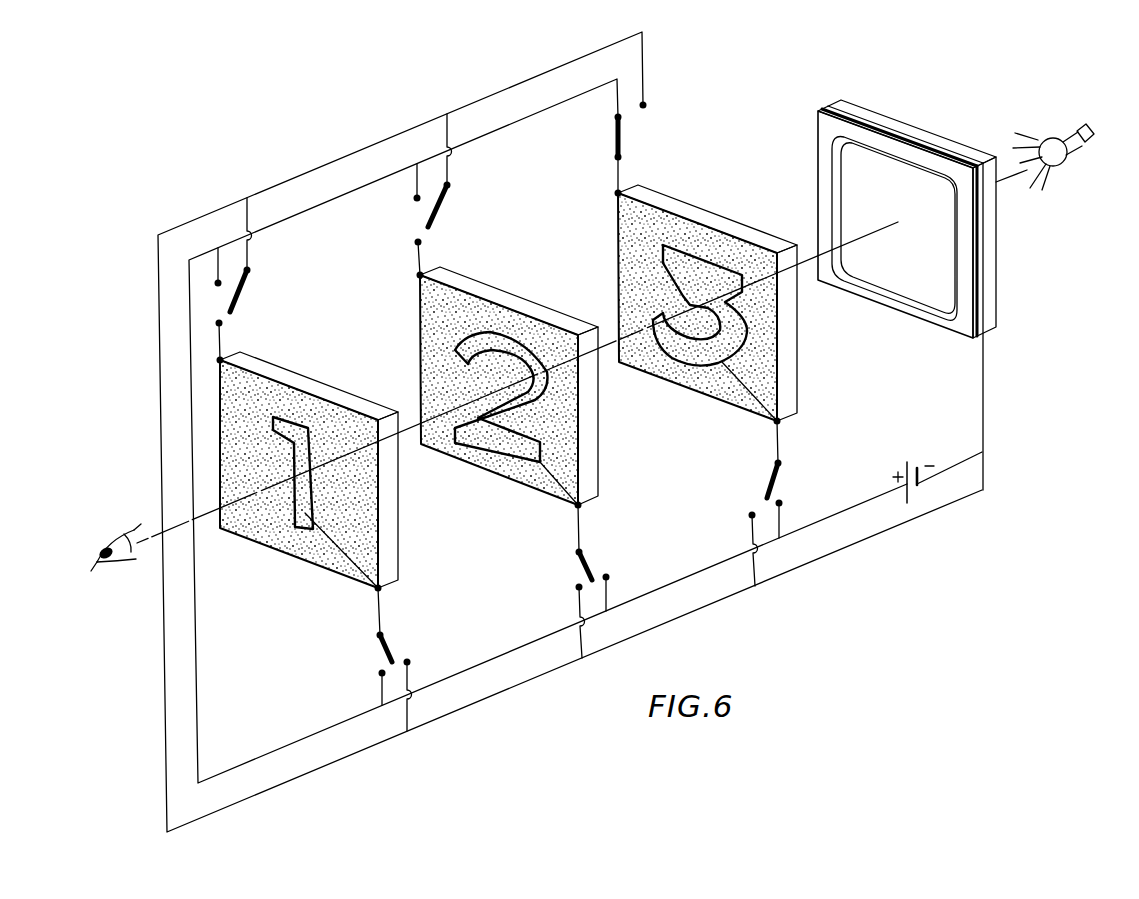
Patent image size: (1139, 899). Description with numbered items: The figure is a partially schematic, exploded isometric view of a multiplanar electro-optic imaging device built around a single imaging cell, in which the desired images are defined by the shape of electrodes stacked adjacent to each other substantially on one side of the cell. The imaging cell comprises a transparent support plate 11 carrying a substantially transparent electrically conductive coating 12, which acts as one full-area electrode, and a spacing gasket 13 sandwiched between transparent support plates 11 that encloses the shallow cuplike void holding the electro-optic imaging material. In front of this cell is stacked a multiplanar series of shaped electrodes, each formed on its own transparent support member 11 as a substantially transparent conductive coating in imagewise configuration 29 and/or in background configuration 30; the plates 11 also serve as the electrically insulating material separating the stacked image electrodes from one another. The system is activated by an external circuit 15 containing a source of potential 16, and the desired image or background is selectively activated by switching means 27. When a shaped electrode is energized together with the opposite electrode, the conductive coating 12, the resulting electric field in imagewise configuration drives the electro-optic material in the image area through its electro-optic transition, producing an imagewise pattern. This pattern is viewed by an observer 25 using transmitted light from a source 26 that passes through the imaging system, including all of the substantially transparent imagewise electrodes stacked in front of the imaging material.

The transparent support plate 11 is at (250, 357).
The substantially transparent electrically conductive coating 12 is at (884, 128).
The spacing gasket 13 is at (926, 146).
The external circuit 15 is at (992, 453).
The source of potential 16 is at (911, 462).
The observer 25 is at (93, 557).
The light source 26 is at (1094, 138).
The switching means 27 is at (294, 284).
The conductive coating in imagewise configuration 29 is at (305, 527).
The conductive coating in background configuration 30 is at (265, 510).